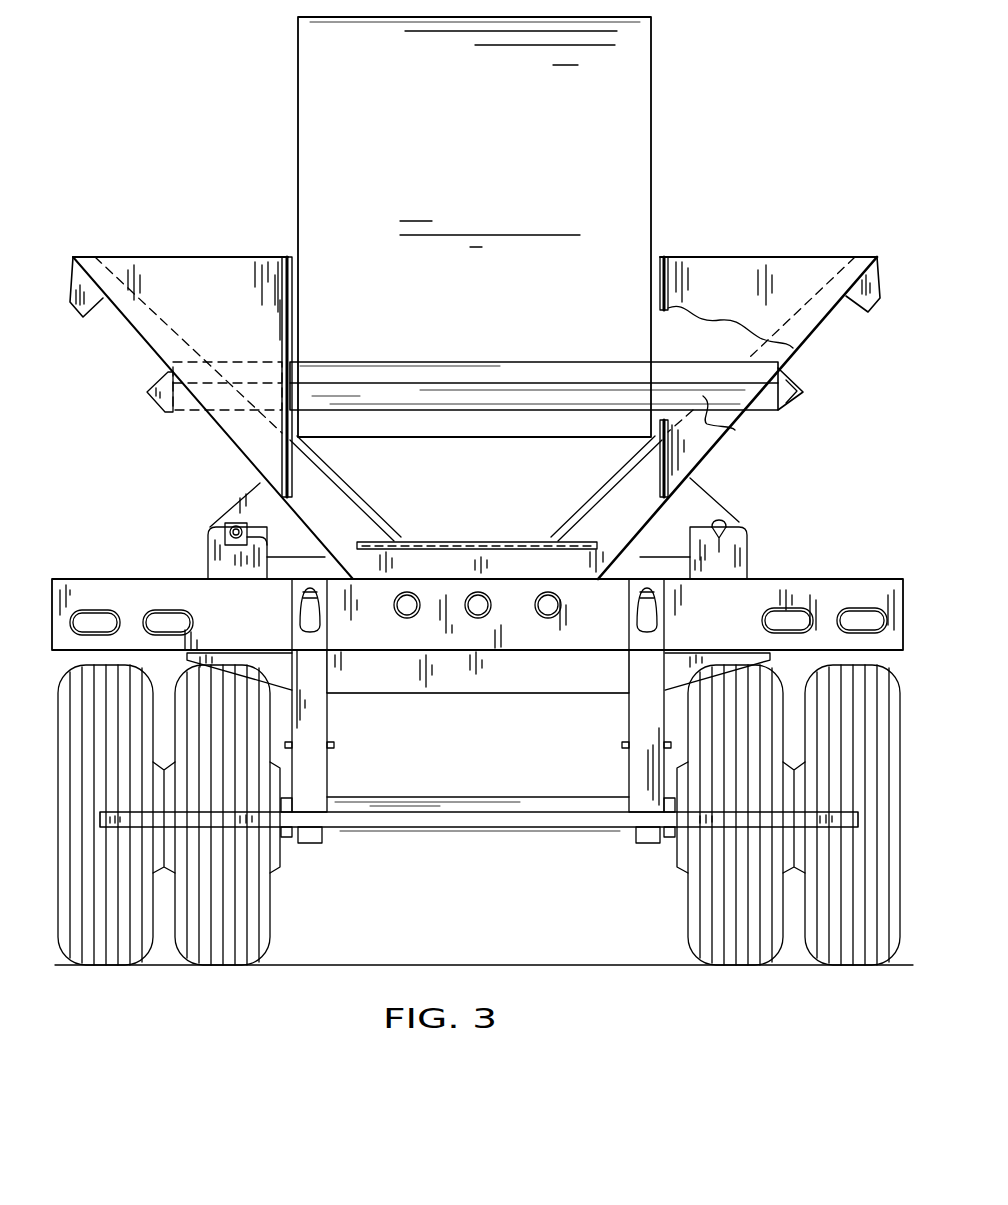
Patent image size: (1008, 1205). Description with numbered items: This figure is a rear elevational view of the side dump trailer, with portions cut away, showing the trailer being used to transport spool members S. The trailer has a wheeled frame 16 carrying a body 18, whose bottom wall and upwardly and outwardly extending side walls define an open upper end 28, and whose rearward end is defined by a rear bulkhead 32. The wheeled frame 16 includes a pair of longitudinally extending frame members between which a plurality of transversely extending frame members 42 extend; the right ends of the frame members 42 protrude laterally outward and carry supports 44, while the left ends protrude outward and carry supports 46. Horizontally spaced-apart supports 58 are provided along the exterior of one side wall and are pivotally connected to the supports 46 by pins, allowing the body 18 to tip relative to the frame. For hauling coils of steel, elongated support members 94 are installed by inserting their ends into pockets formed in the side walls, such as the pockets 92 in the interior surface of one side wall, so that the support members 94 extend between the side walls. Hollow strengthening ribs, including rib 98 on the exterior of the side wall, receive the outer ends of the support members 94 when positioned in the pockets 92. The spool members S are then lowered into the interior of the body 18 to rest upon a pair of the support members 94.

The spool member S is at (641, 117).
The wheeled frame 16 is at (868, 568).
The body 18 is at (829, 248).
The open upper end 28 is at (201, 236).
The rear bulkhead 32 is at (712, 301).
The transversely extending frame member 42 is at (593, 677).
The support 44 is at (718, 556).
The support 46 is at (213, 555).
The support 58 is at (232, 505).
The pocket 92 is at (801, 393).
The support member 94 is at (733, 432).
The strengthening rib 98 is at (147, 392).